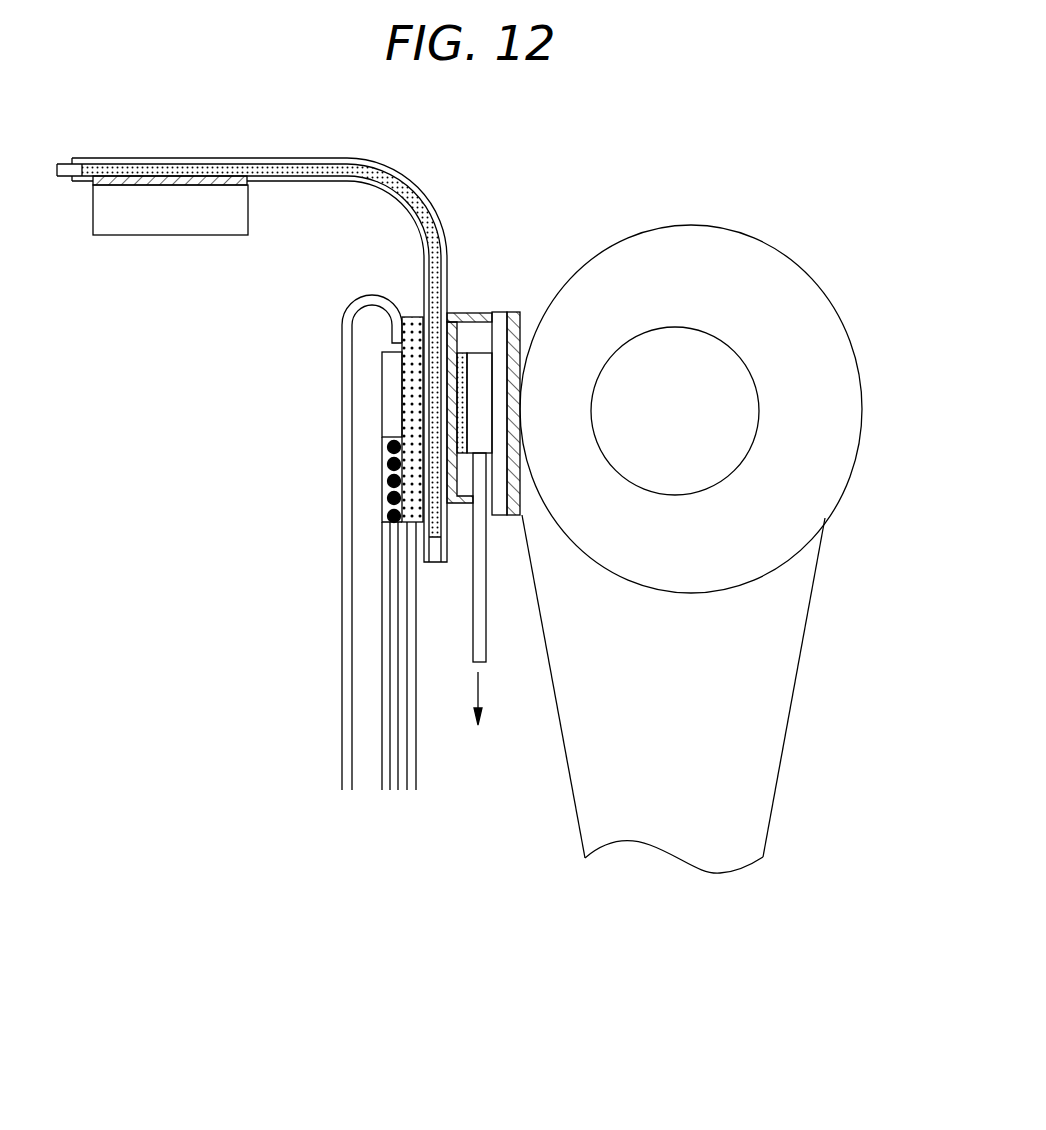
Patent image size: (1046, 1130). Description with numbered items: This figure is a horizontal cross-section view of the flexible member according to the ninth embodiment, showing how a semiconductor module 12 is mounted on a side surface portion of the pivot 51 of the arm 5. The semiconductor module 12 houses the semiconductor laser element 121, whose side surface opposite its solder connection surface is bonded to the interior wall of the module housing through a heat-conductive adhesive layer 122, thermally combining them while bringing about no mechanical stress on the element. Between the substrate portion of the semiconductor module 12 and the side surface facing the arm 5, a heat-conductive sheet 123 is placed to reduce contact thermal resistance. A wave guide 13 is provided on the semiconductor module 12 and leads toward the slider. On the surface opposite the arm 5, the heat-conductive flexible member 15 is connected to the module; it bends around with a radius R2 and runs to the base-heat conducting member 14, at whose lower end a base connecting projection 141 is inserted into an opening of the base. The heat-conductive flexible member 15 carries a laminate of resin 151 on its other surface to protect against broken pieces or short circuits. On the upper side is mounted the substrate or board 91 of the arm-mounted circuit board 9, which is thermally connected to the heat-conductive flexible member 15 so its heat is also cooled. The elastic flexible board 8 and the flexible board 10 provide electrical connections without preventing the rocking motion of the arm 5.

The arm 5 is at (662, 812).
The pivot 51 is at (713, 355).
The elastic flexible board 8 is at (343, 627).
The arm-mounted circuit board 9 is at (380, 392).
The substrate or board 91 is at (388, 484).
The flexible board 10 is at (382, 685).
The semiconductor module 12 is at (473, 313).
The semiconductor laser element 121 is at (483, 430).
The heat-conductive adhesive layer 122 is at (470, 375).
The heat-conductive sheet 123 is at (452, 313).
The wave guide 13 is at (480, 642).
The base-heat conducting member 14 is at (205, 228).
The base connecting projection 141 is at (121, 186).
The heat-conductive flexible member 15 is at (273, 166).
The laminate of resin 151 is at (178, 160).
The bending radius R2 is at (401, 204).